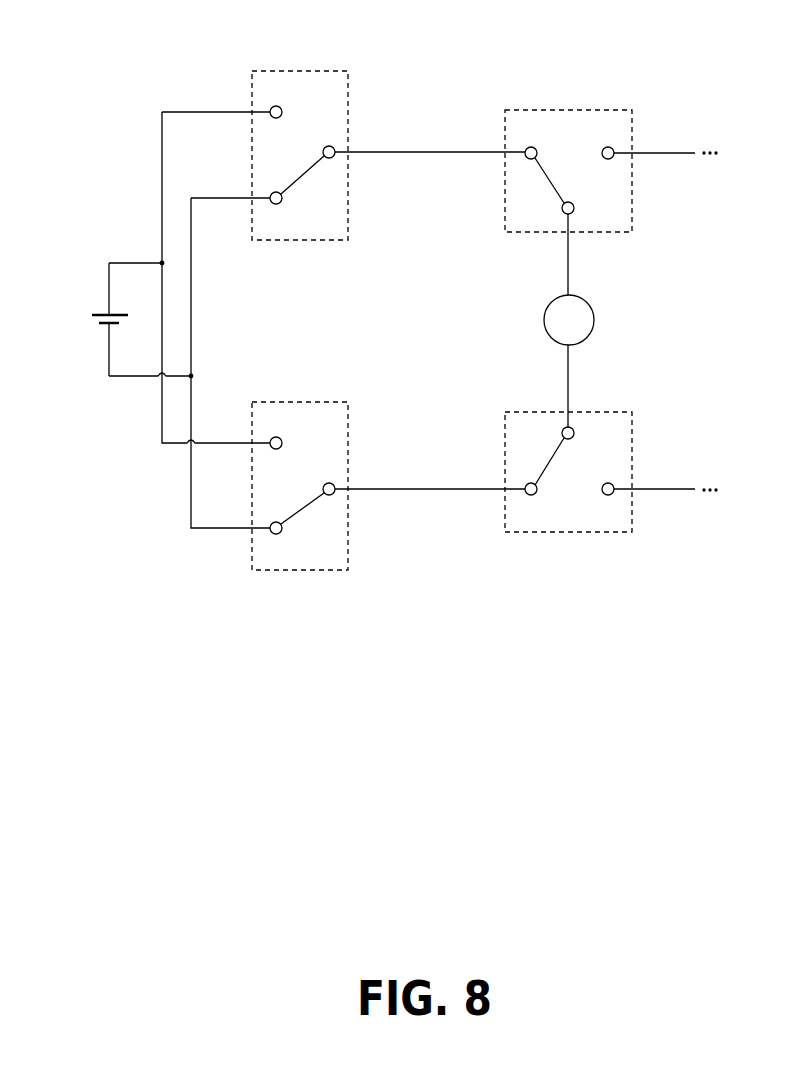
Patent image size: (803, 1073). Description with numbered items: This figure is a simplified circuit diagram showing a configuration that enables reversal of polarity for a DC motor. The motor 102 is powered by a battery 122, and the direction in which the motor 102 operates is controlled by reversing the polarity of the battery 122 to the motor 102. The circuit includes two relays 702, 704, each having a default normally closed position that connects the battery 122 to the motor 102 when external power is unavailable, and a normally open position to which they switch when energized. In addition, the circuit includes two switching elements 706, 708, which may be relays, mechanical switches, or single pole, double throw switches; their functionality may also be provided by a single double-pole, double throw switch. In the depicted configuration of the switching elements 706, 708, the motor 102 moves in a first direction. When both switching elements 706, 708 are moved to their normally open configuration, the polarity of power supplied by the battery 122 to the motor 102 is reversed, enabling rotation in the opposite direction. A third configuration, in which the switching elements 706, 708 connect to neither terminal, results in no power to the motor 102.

The motor 102 is at (594, 303).
The battery 122 is at (98, 313).
The relay 702 is at (568, 109).
The relay 704 is at (569, 535).
The switching element 706 is at (300, 574).
The switching element 708 is at (300, 70).